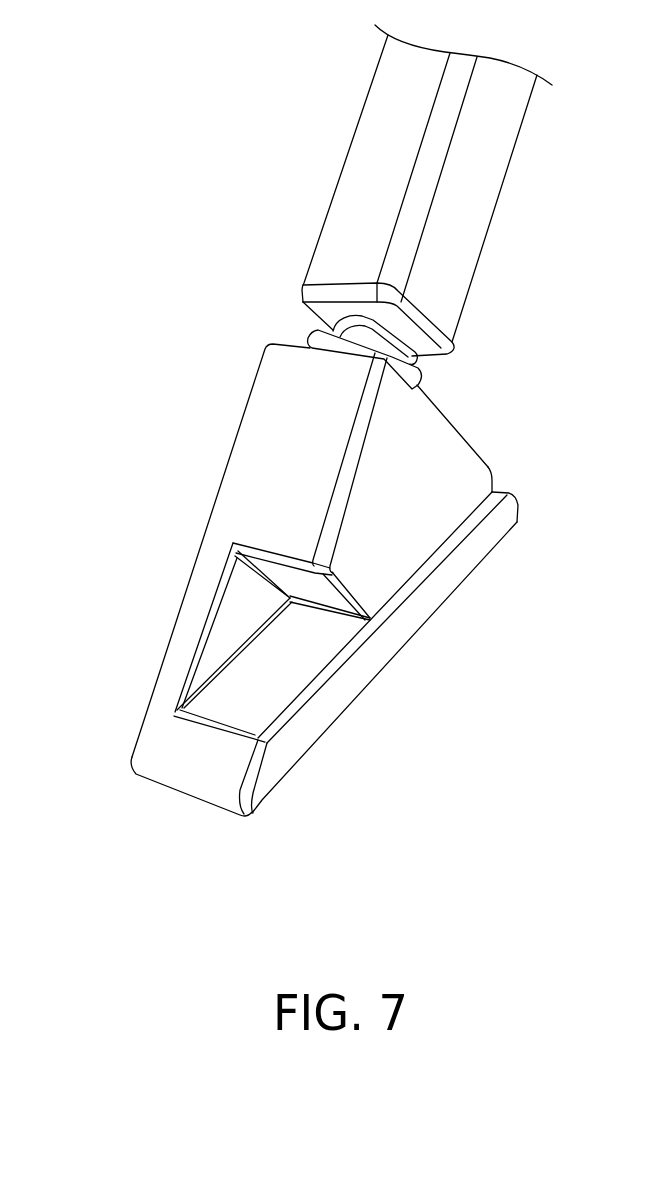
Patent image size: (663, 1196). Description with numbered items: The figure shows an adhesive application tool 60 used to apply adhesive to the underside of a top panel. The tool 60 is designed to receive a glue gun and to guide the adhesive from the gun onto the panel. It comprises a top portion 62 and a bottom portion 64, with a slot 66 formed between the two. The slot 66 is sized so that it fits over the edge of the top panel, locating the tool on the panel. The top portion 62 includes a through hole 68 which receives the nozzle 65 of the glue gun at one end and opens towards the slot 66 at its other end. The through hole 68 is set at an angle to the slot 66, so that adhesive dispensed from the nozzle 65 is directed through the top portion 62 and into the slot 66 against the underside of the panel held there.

The tool 60 is at (112, 512).
The top portion 62 is at (243, 446).
The bottom portion 64 is at (430, 608).
The nozzle 65 is at (346, 167).
The slot 66 is at (508, 469).
The through hole 68 is at (318, 604).